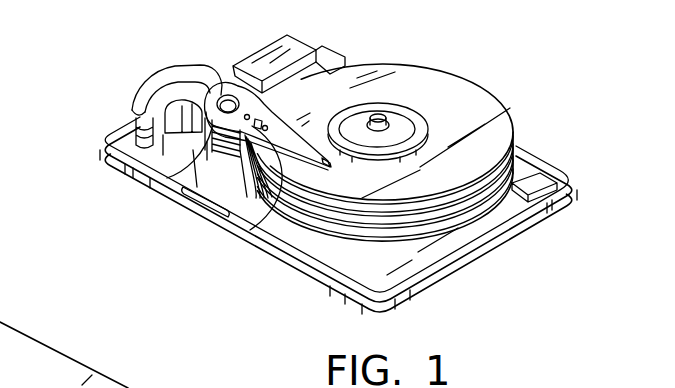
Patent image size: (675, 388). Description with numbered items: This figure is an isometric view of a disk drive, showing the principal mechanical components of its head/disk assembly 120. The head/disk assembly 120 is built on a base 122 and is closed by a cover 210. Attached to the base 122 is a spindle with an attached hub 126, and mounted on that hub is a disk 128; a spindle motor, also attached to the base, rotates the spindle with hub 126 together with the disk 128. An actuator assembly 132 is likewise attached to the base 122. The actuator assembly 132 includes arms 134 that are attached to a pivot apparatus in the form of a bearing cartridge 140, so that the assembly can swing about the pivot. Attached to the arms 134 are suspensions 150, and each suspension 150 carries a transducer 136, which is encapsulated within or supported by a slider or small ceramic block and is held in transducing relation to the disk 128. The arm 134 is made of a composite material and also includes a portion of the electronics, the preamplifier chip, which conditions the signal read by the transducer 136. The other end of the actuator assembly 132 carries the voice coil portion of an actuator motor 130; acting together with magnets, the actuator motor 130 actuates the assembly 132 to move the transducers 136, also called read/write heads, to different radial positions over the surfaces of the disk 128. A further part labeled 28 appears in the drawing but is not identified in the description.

The head/disk assembly 120 is at (483, 61).
The base 122 is at (400, 277).
The spindle with an attached hub 126 is at (388, 120).
The disk 128 is at (494, 112).
The actuator motor 130 is at (165, 78).
The crash stop 28 is at (160, 108).
The actuator assembly 132 is at (167, 178).
The arm 134 is at (274, 107).
The transducer 136 is at (320, 168).
The bearing cartridge 140 is at (230, 96).
The suspension 150 is at (247, 228).
The cover 210 is at (160, 387).